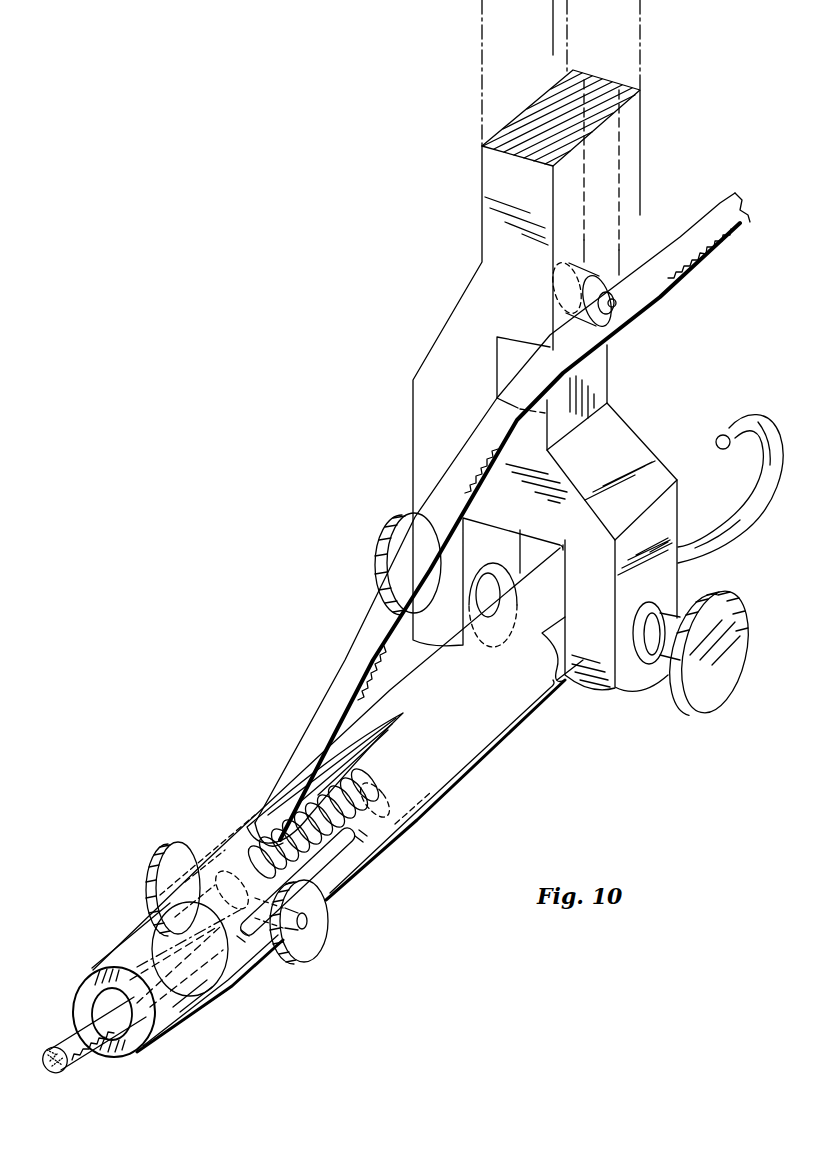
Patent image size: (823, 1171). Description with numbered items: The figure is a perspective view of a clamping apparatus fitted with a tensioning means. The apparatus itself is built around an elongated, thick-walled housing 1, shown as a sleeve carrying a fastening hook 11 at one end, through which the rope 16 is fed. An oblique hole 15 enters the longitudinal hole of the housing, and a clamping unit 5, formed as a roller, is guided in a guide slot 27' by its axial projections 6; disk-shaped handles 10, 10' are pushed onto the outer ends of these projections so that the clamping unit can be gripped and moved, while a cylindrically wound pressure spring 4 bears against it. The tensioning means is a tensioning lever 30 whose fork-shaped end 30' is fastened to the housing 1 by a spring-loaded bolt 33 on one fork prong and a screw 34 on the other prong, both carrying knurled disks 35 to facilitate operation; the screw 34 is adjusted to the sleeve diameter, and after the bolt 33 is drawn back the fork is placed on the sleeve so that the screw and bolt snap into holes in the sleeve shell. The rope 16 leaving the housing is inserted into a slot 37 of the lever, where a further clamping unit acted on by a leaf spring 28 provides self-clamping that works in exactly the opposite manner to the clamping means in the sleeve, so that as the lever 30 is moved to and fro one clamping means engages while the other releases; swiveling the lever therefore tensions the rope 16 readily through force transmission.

The housing 1 is at (460, 748).
The pressure spring 4 is at (398, 825).
The clamping unit 5 is at (277, 847).
The axial projections 6 is at (308, 925).
The disk-shaped handle 10 is at (161, 874).
The disk-shaped handle 10' is at (318, 931).
The fastening hook 11 is at (725, 432).
The oblique hole 15 is at (340, 770).
The rope 16 is at (720, 210).
The guide slot 27' is at (317, 853).
The leaf spring 28 is at (598, 80).
The tensioning lever 30 is at (526, 323).
The fork-shaped end 30' is at (609, 540).
The spring-loaded bolt 33 is at (660, 646).
The screw 34 is at (385, 530).
The knurled disks 35 is at (718, 690).
The slot 37 is at (500, 362).